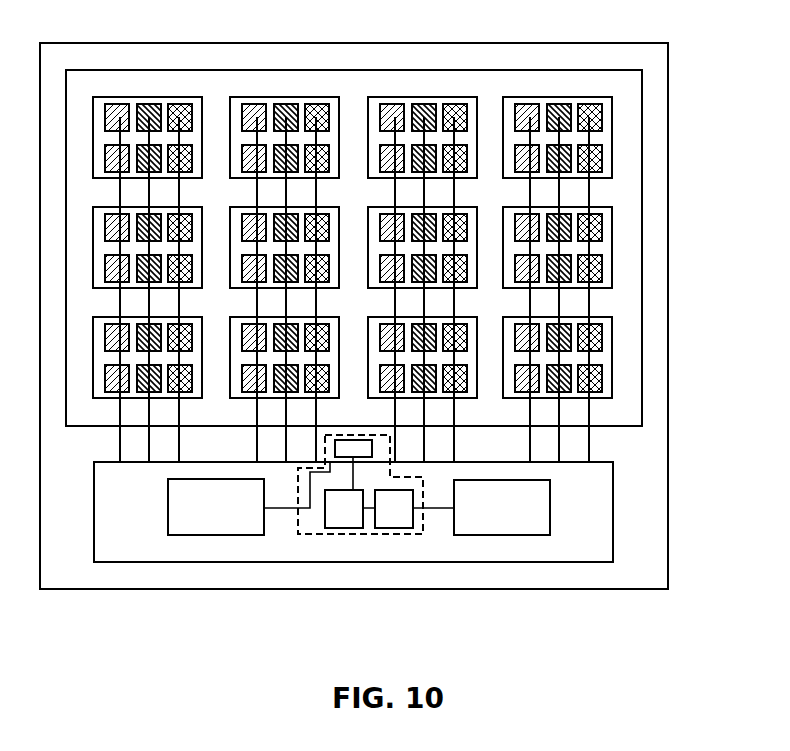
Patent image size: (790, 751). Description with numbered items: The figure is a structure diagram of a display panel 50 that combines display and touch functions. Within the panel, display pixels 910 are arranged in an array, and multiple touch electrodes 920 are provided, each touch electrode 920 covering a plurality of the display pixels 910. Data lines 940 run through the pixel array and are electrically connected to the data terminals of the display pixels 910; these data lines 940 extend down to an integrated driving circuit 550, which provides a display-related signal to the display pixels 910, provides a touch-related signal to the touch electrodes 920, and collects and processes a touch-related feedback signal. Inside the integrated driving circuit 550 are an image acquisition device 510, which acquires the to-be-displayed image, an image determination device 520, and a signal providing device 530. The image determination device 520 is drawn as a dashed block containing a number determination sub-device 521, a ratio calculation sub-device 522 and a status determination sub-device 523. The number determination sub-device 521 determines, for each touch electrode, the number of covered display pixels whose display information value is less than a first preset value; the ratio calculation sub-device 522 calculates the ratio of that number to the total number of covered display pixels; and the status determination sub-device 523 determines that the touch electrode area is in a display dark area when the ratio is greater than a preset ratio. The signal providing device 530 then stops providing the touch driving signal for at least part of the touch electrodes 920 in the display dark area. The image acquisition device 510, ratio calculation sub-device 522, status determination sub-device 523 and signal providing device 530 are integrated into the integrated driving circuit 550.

The display panel 50 is at (79, 21).
The display pixels 910 is at (531, 103).
The touch electrodes 920 is at (616, 89).
The data lines 940 is at (531, 195).
The integrated driving circuit 550 is at (413, 517).
The image acquisition device 510 is at (218, 535).
The image determination device 520 is at (356, 517).
The number determination sub-device 521 is at (352, 439).
The ratio calculation sub-device 522 is at (342, 530).
The status determination sub-device 523 is at (387, 530).
The signal providing device 530 is at (508, 535).